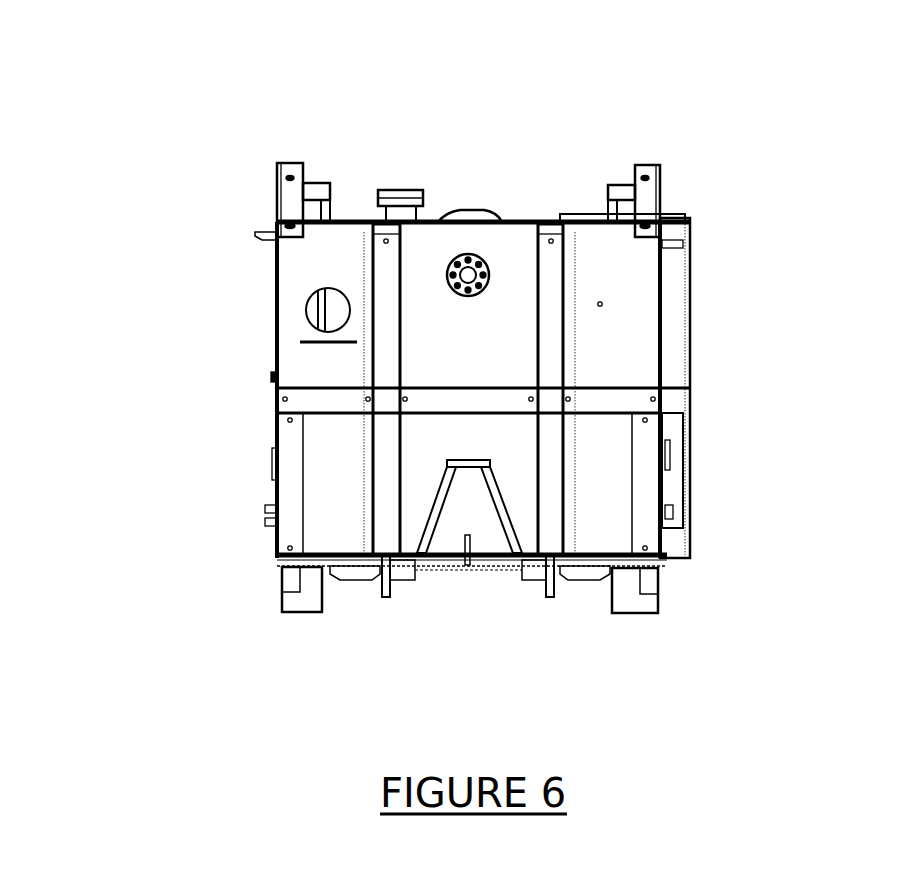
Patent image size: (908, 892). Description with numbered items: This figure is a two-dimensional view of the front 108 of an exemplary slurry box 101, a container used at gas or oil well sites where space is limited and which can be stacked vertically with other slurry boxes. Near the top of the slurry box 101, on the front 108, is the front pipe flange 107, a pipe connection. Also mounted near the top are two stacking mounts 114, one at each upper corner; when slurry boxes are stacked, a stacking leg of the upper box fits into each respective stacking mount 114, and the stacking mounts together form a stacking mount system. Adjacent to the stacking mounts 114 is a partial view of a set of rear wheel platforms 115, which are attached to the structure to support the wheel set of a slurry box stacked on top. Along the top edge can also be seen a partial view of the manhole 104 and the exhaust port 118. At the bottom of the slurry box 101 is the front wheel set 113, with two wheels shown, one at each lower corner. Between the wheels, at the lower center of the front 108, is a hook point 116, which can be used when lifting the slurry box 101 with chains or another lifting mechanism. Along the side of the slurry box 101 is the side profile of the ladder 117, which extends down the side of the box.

The slurry box 101 is at (686, 363).
The manhole 104 is at (473, 212).
The front pipe flange 107 is at (517, 201).
The front 108 is at (256, 324).
The front wheel set 113 is at (460, 631).
The stacking mount 114 is at (456, 165).
The wheel platform 115 is at (321, 185).
The hook point 116 is at (470, 569).
The ladder 117 is at (690, 435).
The exhaust port 118 is at (403, 190).